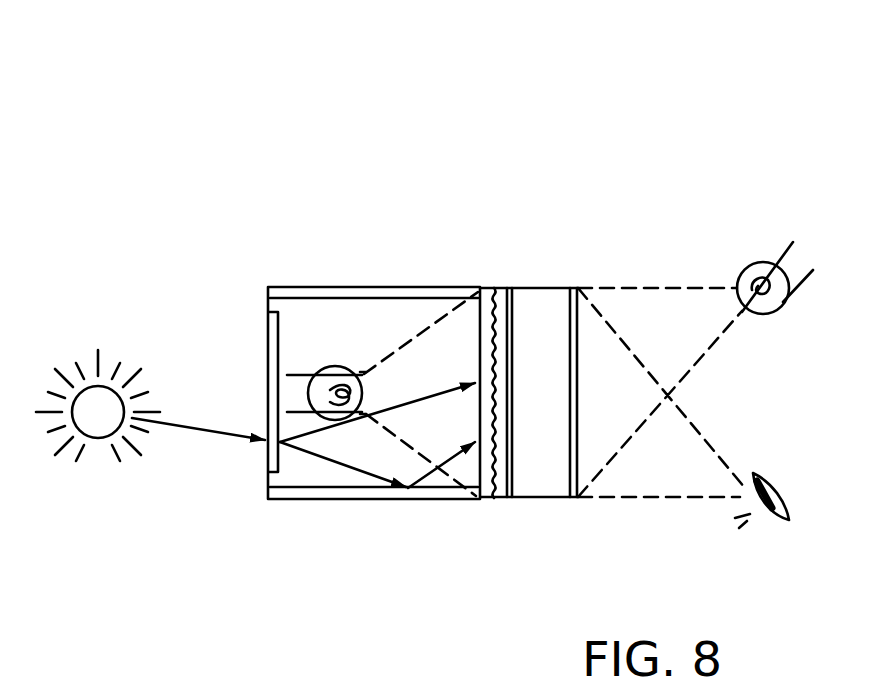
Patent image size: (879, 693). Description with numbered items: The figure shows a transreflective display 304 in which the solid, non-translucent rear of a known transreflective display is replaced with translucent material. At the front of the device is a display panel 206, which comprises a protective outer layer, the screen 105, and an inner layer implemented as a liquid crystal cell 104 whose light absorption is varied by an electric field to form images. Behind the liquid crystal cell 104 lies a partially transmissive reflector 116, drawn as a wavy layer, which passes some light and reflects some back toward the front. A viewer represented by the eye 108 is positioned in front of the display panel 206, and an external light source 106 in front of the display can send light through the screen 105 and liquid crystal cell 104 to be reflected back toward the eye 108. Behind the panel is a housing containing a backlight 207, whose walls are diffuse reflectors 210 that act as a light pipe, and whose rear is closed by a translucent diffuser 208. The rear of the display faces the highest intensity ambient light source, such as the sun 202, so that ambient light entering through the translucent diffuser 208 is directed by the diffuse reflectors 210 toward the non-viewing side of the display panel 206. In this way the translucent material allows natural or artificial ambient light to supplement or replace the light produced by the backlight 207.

The transreflective display 304 is at (480, 168).
The sun 202 is at (97, 440).
The backlight 207 is at (330, 420).
The translucent diffuser 208 is at (267, 331).
The diffuse reflector 210 is at (425, 287).
The display panel 206 is at (578, 279).
The partially transmissive reflector 116 is at (488, 499).
The liquid crystal cell 104 is at (523, 499).
The screen 105 is at (580, 459).
The external light source 106 is at (762, 262).
The eye 108 is at (763, 522).